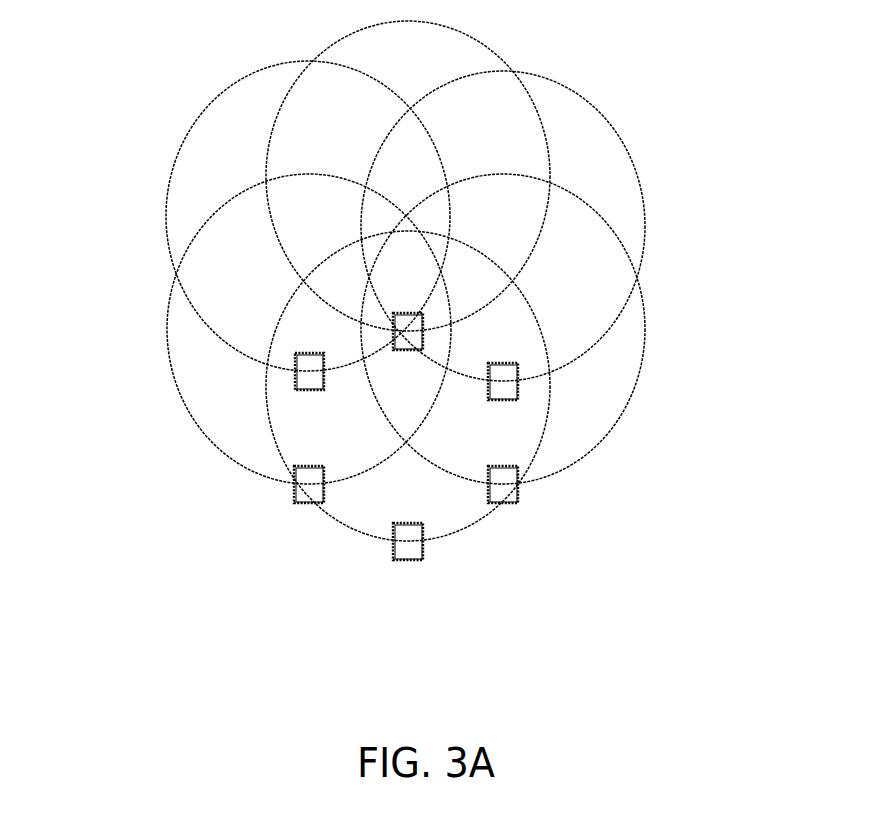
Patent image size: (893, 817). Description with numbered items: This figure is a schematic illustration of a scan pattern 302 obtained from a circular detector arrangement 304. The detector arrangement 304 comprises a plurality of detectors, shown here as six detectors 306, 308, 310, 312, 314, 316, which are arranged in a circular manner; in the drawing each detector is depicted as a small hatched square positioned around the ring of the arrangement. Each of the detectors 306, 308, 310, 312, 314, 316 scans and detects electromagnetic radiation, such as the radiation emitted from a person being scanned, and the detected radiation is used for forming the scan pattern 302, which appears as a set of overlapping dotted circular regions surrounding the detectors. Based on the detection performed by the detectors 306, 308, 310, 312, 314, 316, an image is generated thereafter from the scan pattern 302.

The scan pattern 302 is at (460, 281).
The circular detector arrangement 304 is at (421, 570).
The detector 306 is at (506, 389).
The detector 308 is at (590, 517).
The detector 310 is at (412, 555).
The detector 312 is at (301, 484).
The detector 314 is at (315, 378).
The detector 316 is at (408, 343).